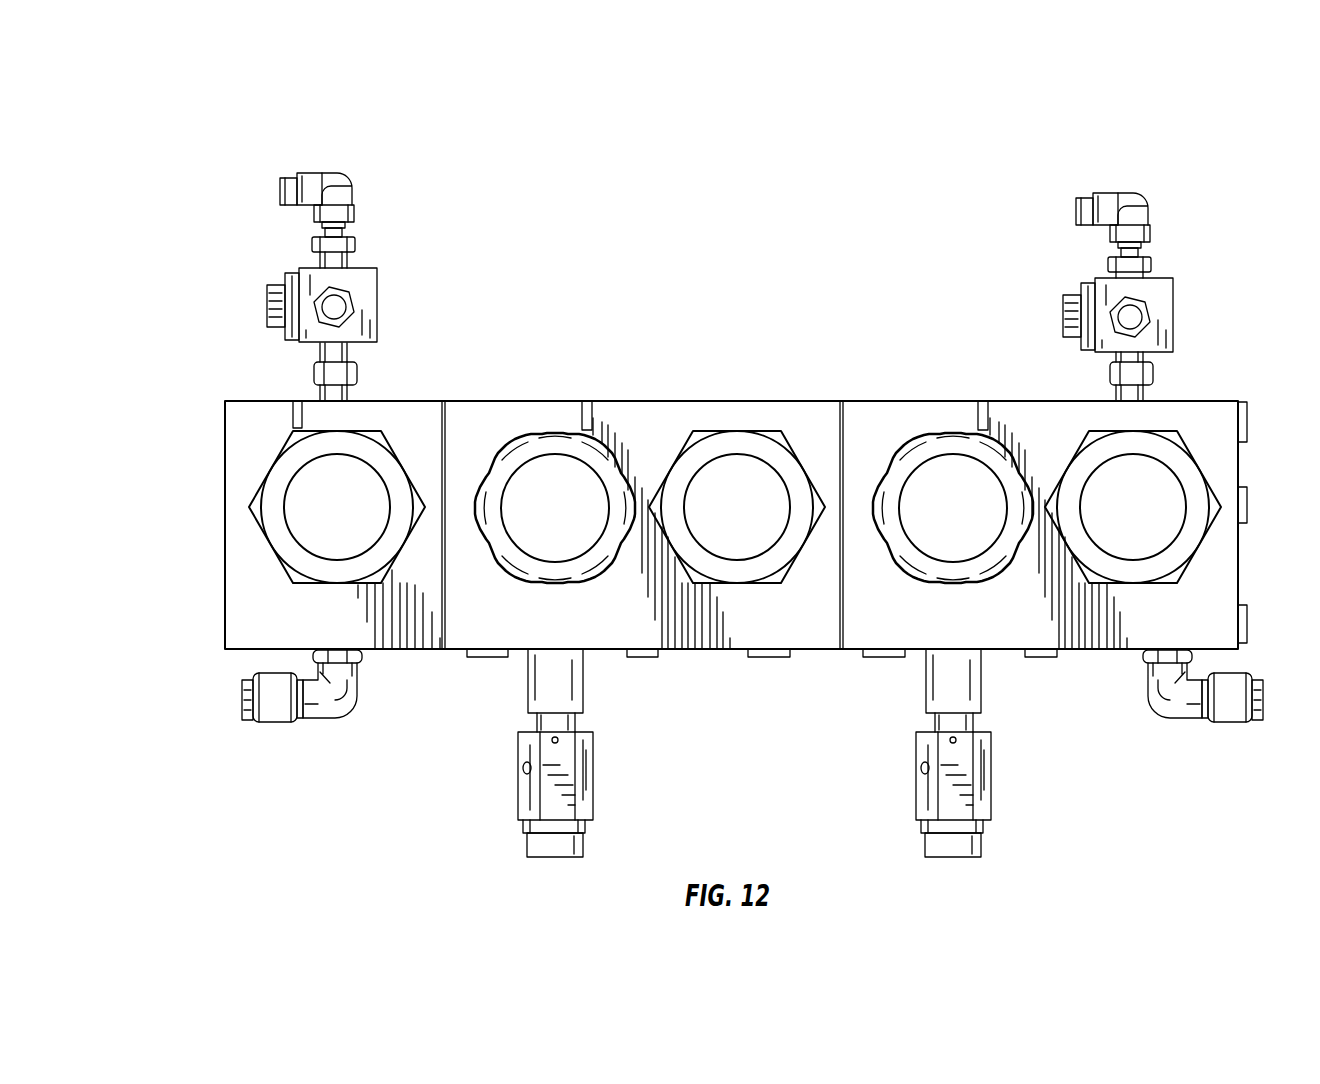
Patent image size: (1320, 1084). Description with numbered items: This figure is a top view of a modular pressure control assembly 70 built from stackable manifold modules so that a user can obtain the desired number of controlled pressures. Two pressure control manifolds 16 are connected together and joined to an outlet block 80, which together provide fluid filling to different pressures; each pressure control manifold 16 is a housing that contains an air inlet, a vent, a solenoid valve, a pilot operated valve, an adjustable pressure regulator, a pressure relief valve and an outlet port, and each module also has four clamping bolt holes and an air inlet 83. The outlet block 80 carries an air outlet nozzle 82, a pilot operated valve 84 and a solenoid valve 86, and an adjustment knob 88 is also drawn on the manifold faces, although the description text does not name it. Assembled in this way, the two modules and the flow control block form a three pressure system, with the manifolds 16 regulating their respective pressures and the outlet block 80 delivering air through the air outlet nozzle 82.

The modular pressure control assembly 70 is at (243, 148).
The outlet block 80 is at (223, 573).
The pilot operated valve 84 is at (265, 466).
The solenoid valve 86 is at (378, 278).
The adjustment knob 88 is at (552, 436).
The pressure control manifold 16 is at (785, 400).
The air outlet nozzle 82 is at (278, 722).
The air inlet 83 is at (1232, 722).